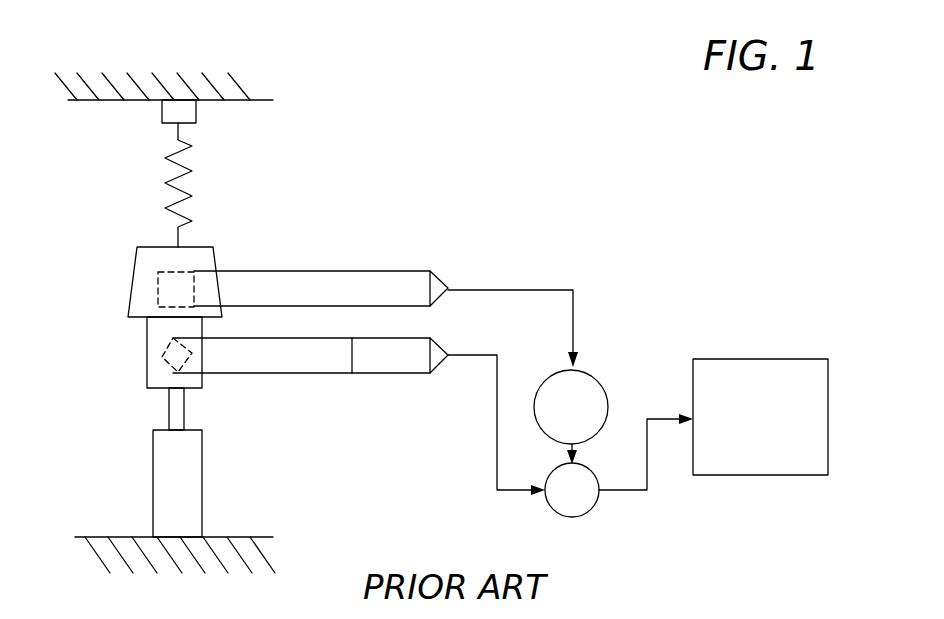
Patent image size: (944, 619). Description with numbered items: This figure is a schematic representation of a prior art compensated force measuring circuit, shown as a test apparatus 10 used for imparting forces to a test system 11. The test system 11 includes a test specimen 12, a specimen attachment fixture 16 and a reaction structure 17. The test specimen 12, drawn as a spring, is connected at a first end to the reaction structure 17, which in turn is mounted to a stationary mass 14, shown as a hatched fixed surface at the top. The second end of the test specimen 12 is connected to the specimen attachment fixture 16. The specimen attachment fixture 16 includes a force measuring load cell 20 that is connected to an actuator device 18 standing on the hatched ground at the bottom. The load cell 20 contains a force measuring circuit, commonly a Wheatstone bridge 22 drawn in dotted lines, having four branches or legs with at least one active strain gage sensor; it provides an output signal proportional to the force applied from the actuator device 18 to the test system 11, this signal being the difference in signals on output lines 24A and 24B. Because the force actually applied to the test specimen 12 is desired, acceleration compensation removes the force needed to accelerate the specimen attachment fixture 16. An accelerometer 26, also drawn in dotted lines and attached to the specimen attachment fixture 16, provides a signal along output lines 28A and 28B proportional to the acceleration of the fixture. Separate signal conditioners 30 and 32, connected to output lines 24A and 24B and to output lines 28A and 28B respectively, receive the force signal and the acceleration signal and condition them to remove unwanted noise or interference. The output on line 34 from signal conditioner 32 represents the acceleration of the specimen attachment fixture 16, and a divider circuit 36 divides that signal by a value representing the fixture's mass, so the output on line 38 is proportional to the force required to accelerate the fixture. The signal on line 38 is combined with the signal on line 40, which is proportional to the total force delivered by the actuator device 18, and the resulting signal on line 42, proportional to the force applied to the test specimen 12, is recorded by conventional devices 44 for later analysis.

The test apparatus 10 is at (378, 158).
The test system 11 is at (112, 236).
The test specimen 12 is at (180, 160).
The stationary mass 14 is at (265, 100).
The specimen attachment fixture 16 is at (112, 345).
The reaction structure 17 is at (197, 108).
The actuator device 18 is at (202, 478).
The force measuring load cell 20 is at (203, 390).
The Wheatstone bridge 22 is at (147, 375).
The output line 24A is at (318, 373).
The output line 24B is at (353, 373).
The accelerometer 26 is at (178, 268).
The output line 28A is at (295, 305).
The output line 28B is at (300, 271).
The signal conditioner 30 is at (452, 347).
The signal conditioner 32 is at (452, 282).
The line 34 is at (518, 290).
The divider circuit 36 is at (585, 372).
The line 38 is at (578, 458).
The line 40 is at (497, 468).
The line 42 is at (635, 492).
The recording devices 44 is at (763, 358).